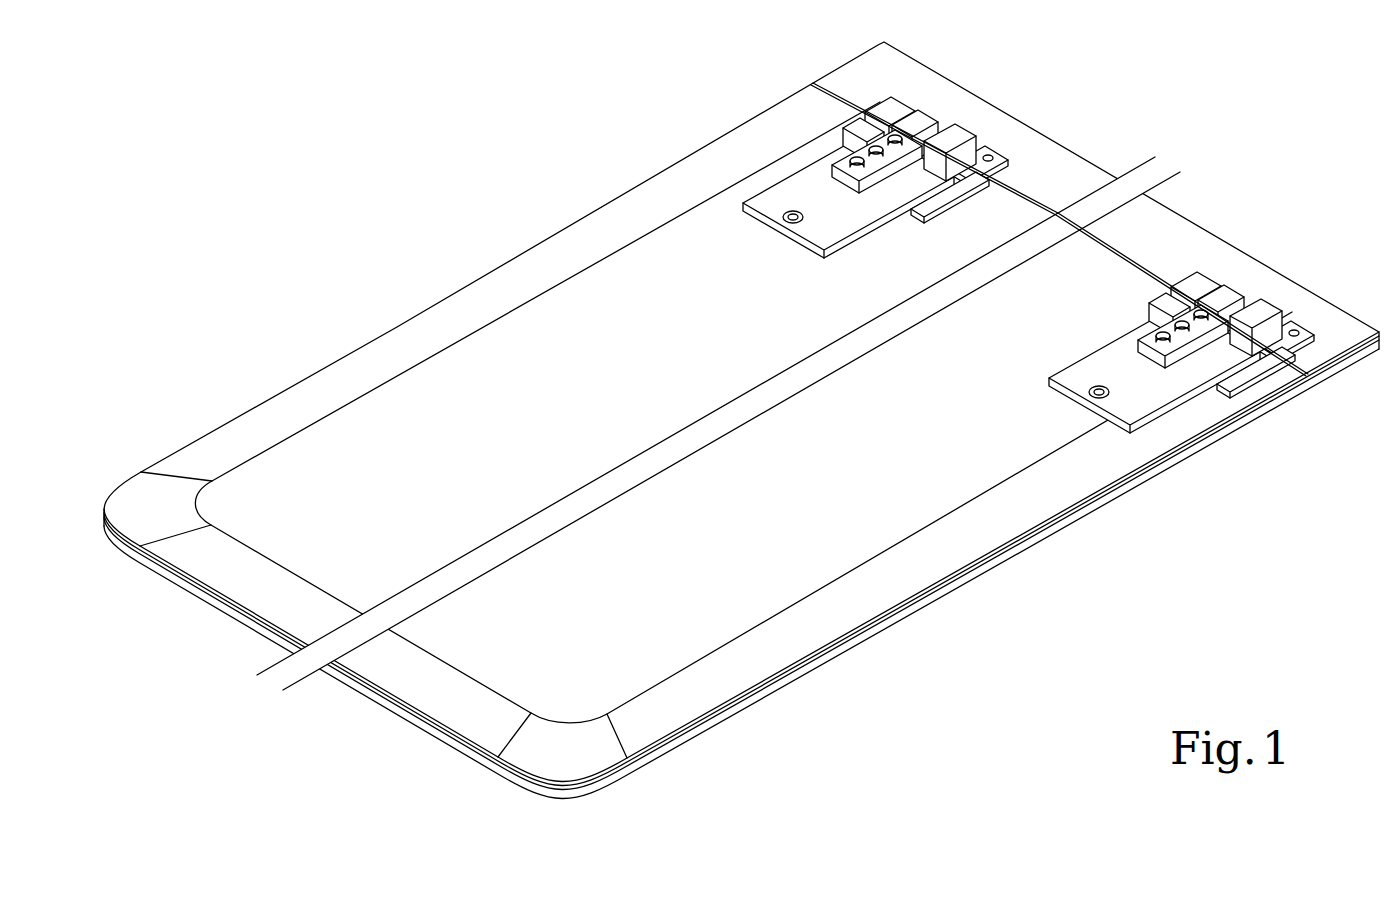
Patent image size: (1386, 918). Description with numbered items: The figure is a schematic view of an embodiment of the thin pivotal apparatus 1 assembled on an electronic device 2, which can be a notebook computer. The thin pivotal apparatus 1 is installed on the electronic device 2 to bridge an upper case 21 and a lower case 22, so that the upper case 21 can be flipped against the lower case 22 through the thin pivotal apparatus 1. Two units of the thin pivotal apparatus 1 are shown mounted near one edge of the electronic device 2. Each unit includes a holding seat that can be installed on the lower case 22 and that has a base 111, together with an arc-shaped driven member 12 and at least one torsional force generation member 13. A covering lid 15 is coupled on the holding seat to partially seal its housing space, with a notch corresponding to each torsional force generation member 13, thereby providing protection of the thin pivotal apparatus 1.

The thin pivotal apparatus 1 is at (1191, 401).
The electronic device 2 is at (397, 328).
The arc-shaped driven member 12 is at (893, 98).
The torsional force generation member 13 is at (940, 113).
The covering lid 15 is at (760, 197).
The base 111 is at (923, 200).
The upper case 21 is at (944, 558).
The lower case 22 is at (850, 655).